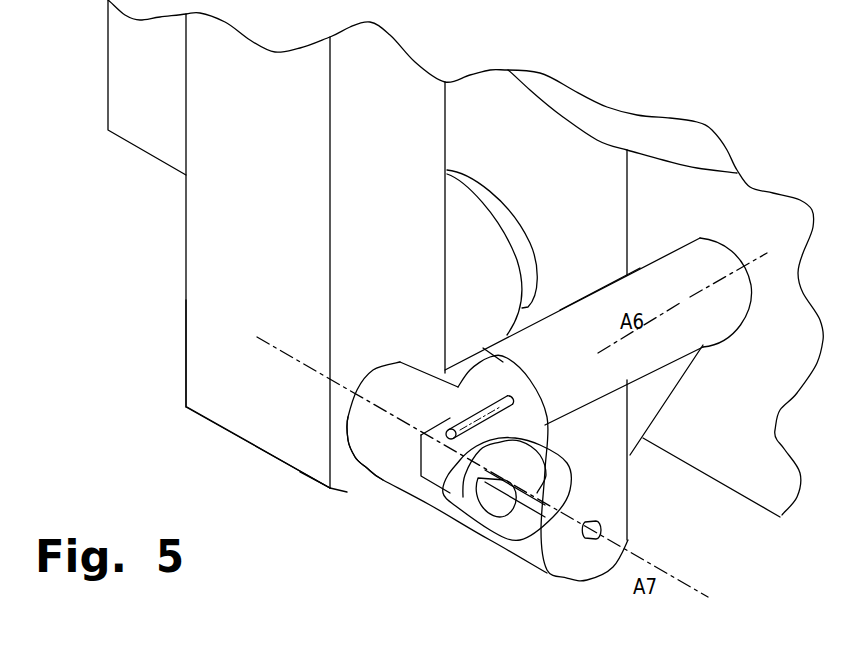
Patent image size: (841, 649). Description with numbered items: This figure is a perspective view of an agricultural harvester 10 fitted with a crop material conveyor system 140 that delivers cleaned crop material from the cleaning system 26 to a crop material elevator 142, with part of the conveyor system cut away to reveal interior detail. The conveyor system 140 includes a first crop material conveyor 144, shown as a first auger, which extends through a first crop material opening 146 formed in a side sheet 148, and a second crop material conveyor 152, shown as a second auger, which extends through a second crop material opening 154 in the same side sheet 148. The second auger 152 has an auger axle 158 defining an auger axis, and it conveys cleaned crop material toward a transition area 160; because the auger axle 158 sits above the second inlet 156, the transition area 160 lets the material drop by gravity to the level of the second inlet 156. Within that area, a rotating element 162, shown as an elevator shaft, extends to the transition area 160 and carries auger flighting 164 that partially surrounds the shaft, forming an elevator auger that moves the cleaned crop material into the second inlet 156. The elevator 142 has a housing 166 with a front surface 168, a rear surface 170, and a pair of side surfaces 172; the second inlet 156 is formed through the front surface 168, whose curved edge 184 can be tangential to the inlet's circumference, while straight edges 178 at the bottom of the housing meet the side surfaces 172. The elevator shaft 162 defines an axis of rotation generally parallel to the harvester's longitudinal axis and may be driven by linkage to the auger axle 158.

The agricultural harvester 10 is at (176, 433).
The cleaning system 26 is at (692, 113).
The crop material conveyor system 140 is at (588, 272).
The crop material elevator 142 is at (244, 440).
The first crop material conveyor 144 is at (497, 237).
The first crop material opening 146 is at (528, 260).
The side sheet 148 is at (614, 188).
The second crop material conveyor 152 is at (668, 407).
The second crop material opening 154 is at (730, 250).
The second inlet 156 is at (395, 362).
The auger axle 158 is at (463, 420).
The transition area 160 is at (630, 483).
The rotating element 162 is at (603, 520).
The auger flighting 164 is at (525, 462).
The housing 166 is at (210, 338).
The front surface 168 is at (401, 272).
The rear surface 170 is at (186, 229).
The side surfaces 172 is at (274, 272).
The straight edges 178 is at (312, 479).
The curved edge 184 is at (369, 490).